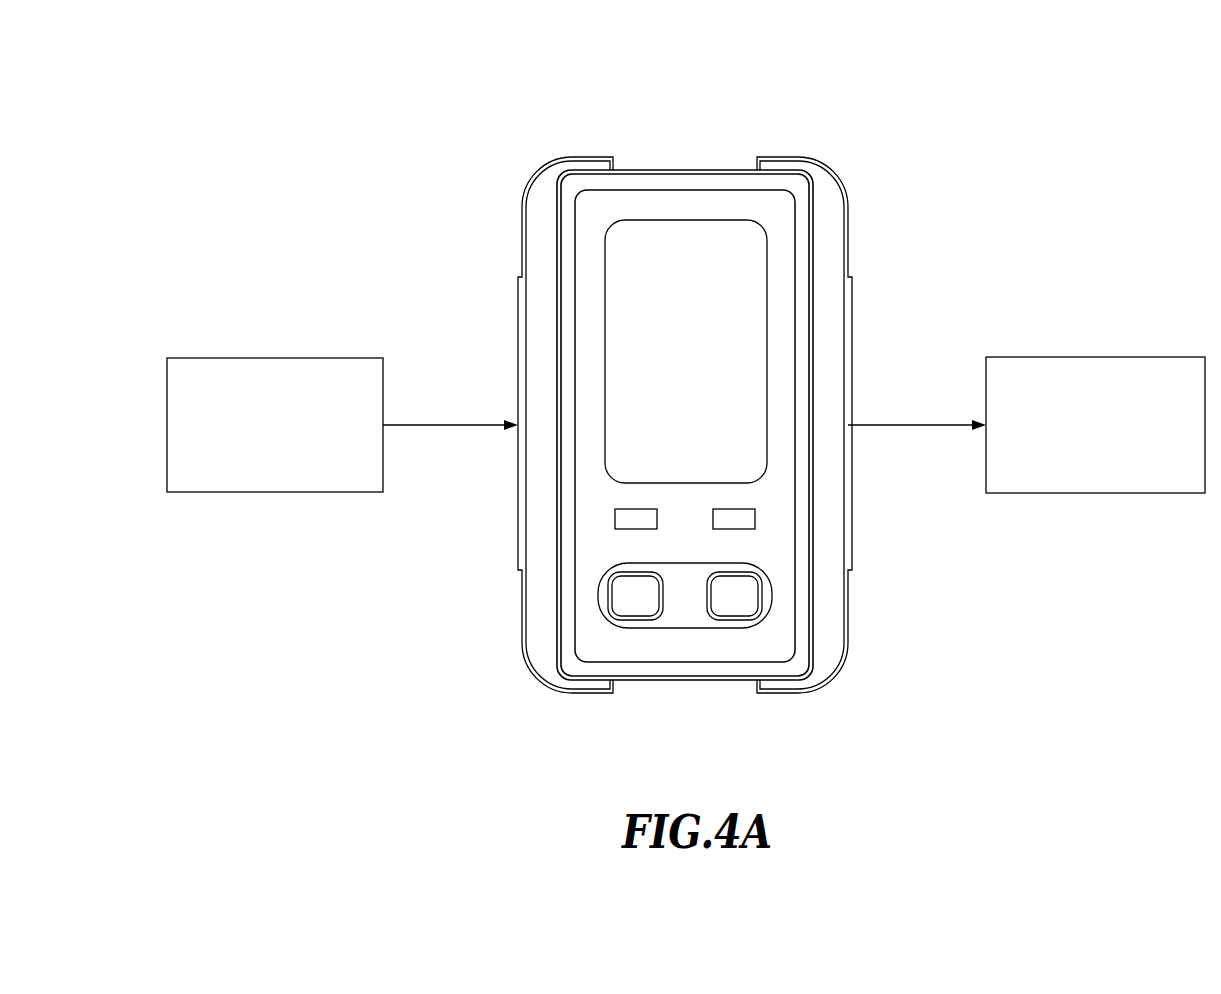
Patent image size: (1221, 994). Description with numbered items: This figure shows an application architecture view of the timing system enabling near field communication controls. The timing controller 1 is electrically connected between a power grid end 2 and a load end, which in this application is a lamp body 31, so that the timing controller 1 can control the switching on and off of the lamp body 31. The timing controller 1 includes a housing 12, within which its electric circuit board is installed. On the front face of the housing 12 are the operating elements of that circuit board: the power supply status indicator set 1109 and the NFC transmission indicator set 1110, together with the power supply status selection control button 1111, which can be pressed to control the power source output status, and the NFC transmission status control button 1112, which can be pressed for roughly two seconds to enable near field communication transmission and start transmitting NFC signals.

The timing controller 1 is at (547, 133).
The housing 12 is at (827, 257).
The NFC transmission status control button 1112 is at (623, 518).
The power supply status selection control button 1111 is at (740, 521).
The NFC transmission indicator set 1110 is at (632, 598).
The power supply status indicator set 1109 is at (740, 597).
The power grid end 2 is at (275, 358).
The lamp body 31 is at (1096, 357).